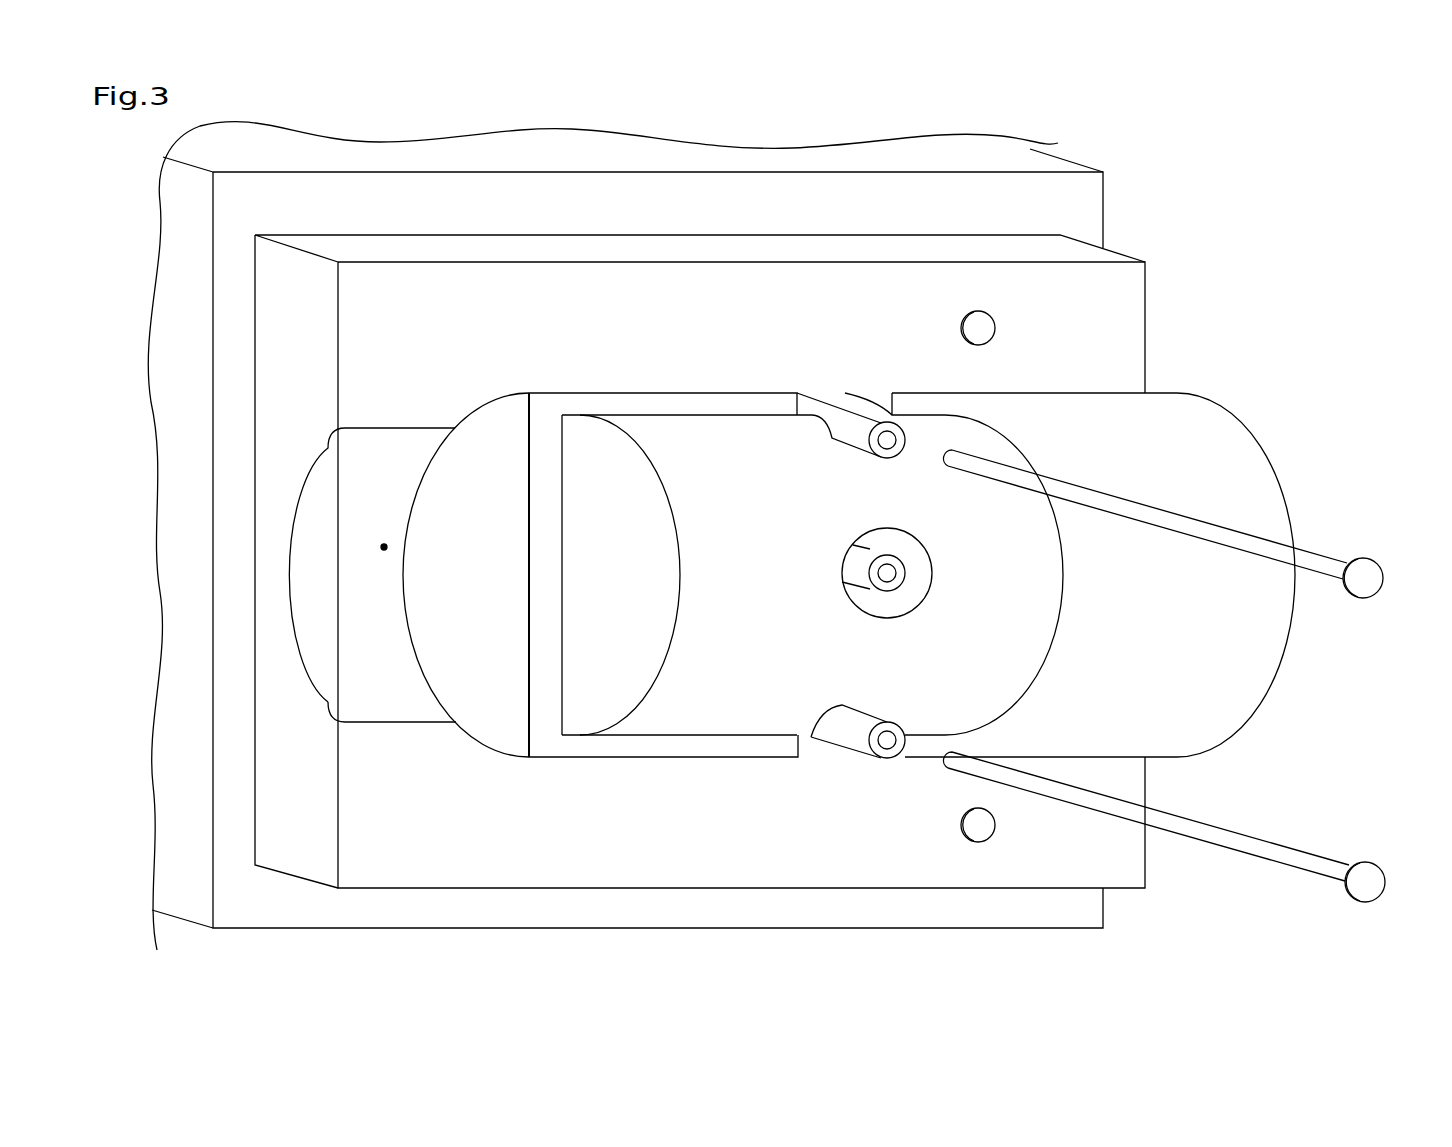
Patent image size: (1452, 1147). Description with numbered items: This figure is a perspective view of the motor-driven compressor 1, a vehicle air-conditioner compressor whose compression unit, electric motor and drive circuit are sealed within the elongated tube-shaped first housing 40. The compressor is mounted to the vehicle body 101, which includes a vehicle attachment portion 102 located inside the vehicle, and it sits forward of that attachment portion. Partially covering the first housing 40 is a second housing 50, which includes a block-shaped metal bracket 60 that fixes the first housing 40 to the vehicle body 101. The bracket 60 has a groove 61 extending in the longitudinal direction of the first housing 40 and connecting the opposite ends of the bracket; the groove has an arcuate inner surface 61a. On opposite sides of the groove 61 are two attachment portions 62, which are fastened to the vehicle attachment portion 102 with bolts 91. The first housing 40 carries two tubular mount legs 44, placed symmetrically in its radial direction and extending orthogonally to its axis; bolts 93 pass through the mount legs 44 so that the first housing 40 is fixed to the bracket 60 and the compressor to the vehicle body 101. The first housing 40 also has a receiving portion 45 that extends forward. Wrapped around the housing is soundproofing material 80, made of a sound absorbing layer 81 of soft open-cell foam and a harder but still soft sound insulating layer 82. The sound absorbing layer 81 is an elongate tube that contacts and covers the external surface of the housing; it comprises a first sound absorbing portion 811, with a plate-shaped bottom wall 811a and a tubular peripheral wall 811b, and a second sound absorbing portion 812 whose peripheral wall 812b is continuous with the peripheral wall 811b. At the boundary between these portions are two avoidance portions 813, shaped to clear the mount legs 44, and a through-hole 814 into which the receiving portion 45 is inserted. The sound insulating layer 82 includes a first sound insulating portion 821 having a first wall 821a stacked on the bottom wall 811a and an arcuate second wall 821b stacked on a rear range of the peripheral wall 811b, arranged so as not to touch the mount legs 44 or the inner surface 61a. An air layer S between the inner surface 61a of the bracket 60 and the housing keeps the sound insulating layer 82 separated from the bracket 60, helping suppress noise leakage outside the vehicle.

The motor-driven compressor 1 is at (1364, 242).
The vehicle body 101 is at (1060, 154).
The vehicle attachment portion 102 is at (1072, 207).
The bracket 60 is at (1224, 240).
The second housing 50 is at (700, 561).
The attachment portion 62 is at (605, 276).
The groove 61 is at (320, 672).
The inner surface 61a is at (362, 704).
The soundproofing material 80 is at (516, 765).
The sound insulating layer 82 is at (547, 586).
The first sound insulating portion 821 is at (456, 694).
The first wall 821a is at (404, 594).
The second wall 821b is at (631, 404).
The sound absorbing layer 81 is at (667, 716).
The first sound absorbing portion 811 is at (706, 722).
The bottom wall 811a is at (592, 669).
The peripheral wall 811b is at (763, 693).
The first housing 40 is at (700, 452).
The mount leg 44 is at (831, 420).
The avoidance portion 813 is at (834, 443).
The second sound absorbing portion 812 is at (925, 714).
The peripheral wall 812b is at (1032, 562).
The receiving portion 45 is at (911, 548).
The through-hole 814 is at (898, 604).
The bolt 93 is at (1386, 579).
The bolt 91 is at (986, 328).
The air layer S is at (384, 545).